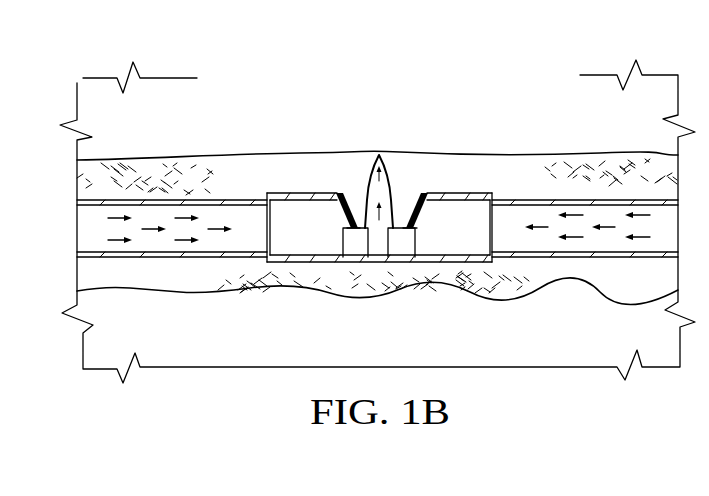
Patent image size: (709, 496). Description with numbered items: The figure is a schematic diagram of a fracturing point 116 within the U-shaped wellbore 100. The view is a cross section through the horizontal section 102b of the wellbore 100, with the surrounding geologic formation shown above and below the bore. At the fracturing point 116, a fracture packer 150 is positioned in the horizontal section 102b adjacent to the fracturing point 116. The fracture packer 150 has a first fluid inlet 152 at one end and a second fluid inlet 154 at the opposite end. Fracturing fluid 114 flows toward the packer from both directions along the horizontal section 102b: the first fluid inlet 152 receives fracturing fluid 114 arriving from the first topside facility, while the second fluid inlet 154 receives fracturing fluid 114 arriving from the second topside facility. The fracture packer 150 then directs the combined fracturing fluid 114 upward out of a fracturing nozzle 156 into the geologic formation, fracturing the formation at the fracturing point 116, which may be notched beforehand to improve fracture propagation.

The U-shaped wellbore 100 is at (582, 48).
The horizontal section 102b is at (163, 242).
The fracturing fluid 114 is at (186, 218).
The fracturing point 116 is at (395, 147).
The fracture packer 150 is at (377, 225).
The first fluid inlet 152 is at (262, 212).
The second fluid inlet 154 is at (492, 213).
The fracturing nozzle 156 is at (352, 203).